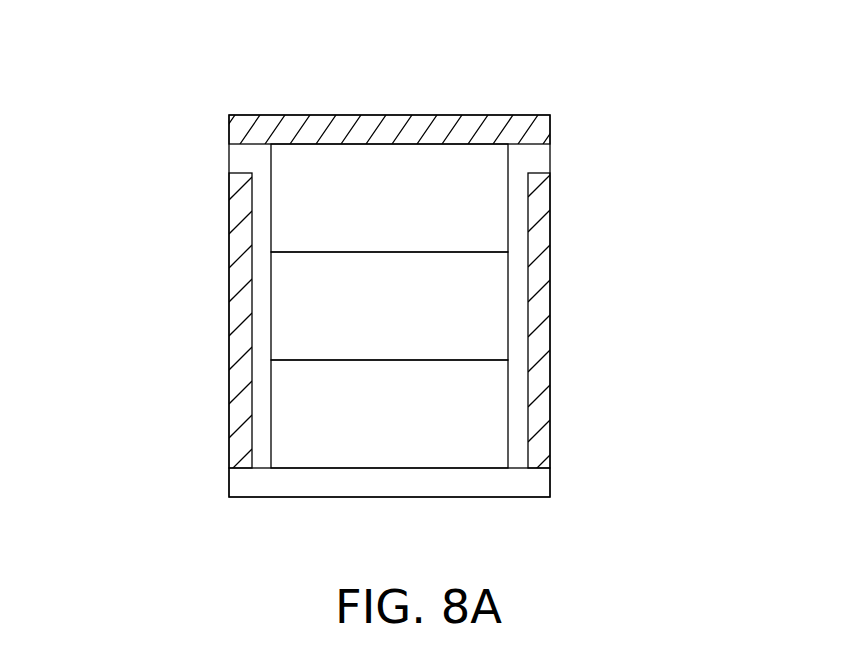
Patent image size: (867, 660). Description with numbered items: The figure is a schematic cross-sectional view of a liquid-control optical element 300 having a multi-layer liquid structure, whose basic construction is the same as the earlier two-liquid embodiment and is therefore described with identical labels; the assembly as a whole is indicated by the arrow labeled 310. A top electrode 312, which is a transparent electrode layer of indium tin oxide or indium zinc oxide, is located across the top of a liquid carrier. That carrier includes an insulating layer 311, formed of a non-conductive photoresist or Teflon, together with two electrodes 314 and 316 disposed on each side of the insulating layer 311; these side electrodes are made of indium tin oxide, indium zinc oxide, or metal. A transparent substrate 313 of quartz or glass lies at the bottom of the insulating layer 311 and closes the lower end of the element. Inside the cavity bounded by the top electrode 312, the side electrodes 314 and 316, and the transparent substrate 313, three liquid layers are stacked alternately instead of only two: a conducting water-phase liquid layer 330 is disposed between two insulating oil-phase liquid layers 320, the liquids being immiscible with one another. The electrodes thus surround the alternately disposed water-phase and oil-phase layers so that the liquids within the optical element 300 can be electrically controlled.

The liquid-control optical element 300 is at (633, 557).
The frame 310 is at (343, 112).
The insulating layer 311 is at (535, 160).
The top electrode 312 is at (273, 130).
The transparent substrate 313 is at (525, 482).
The electrode 314 is at (240, 432).
The electrode 316 is at (530, 428).
The oil-phase liquid layer 320 is at (333, 184).
The water-phase liquid layer 330 is at (333, 301).